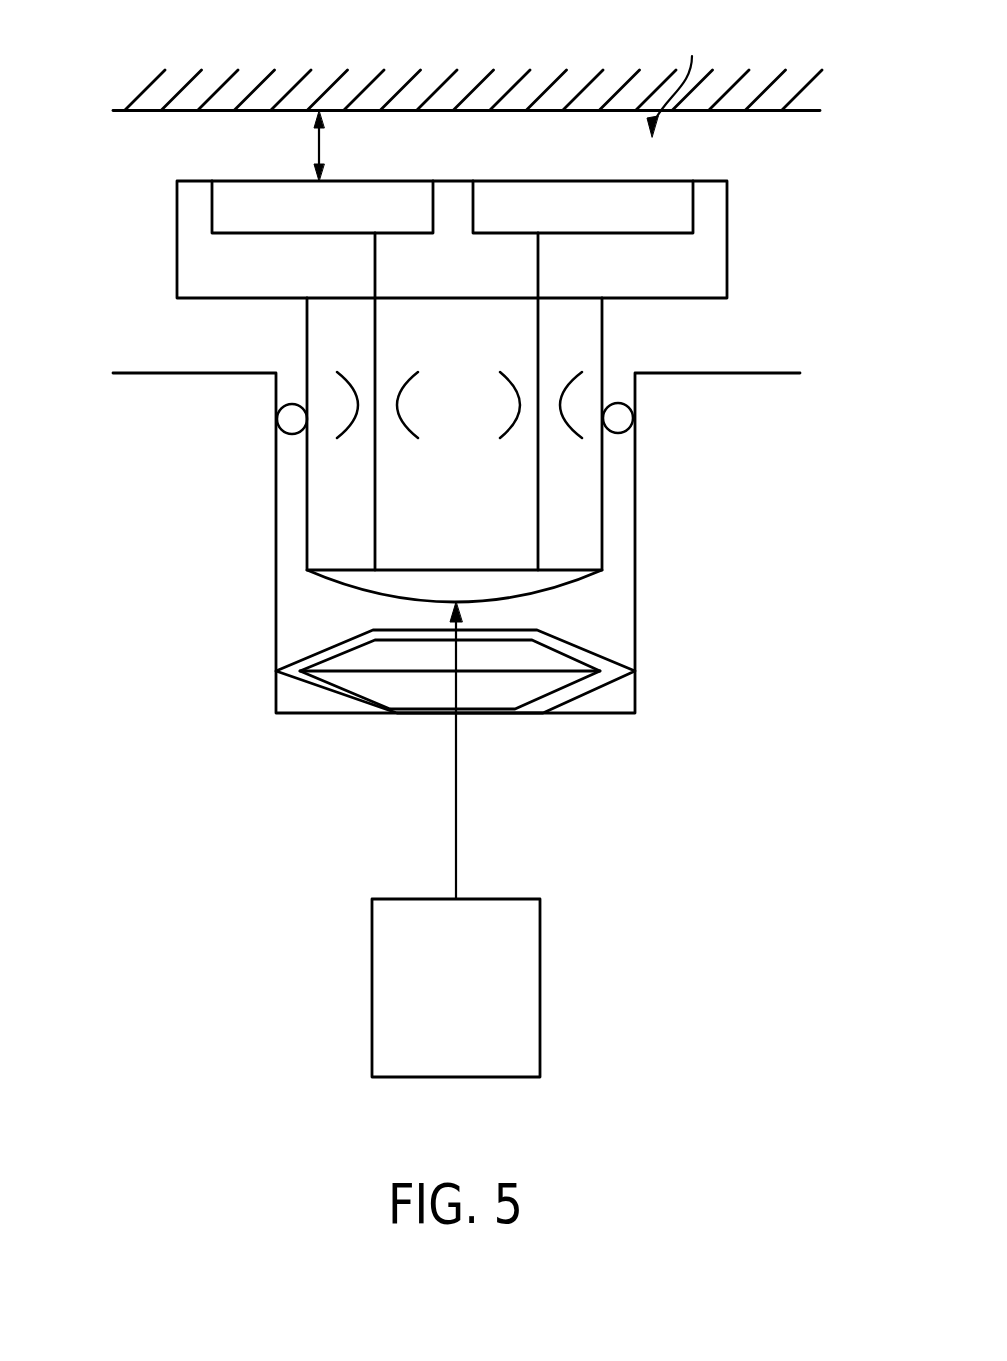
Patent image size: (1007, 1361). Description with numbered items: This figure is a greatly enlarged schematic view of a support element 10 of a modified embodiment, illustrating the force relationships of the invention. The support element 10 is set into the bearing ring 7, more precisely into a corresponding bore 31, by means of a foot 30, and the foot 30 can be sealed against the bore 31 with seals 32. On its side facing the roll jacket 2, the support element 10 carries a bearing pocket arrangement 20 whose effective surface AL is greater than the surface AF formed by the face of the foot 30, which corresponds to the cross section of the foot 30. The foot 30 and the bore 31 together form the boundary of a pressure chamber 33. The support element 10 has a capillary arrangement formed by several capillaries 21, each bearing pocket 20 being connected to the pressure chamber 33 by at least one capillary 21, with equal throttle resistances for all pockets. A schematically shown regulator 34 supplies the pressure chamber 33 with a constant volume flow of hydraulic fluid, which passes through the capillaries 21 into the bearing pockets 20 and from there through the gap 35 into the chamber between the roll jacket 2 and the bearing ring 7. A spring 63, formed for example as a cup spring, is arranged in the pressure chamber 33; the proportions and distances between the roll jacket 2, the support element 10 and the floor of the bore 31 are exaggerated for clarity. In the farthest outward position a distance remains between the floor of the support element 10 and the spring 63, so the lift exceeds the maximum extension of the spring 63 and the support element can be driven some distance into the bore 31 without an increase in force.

The roll jacket 2 is at (158, 93).
The effective surface of the bearing pocket arrangement AL is at (676, 78).
The gap 35 is at (312, 148).
The support element 10 is at (458, 190).
The bearing pocket arrangement 20 is at (405, 190).
The capillaries 21 is at (375, 465).
The bearing ring 7 is at (712, 382).
The foot 30 is at (315, 508).
The seals 32 is at (280, 418).
The bore 31 is at (276, 597).
The surface formed by the face of the foot AF is at (565, 585).
The spring 63 is at (587, 690).
The pressure chamber 33 is at (427, 663).
The regulator 34 is at (470, 1003).